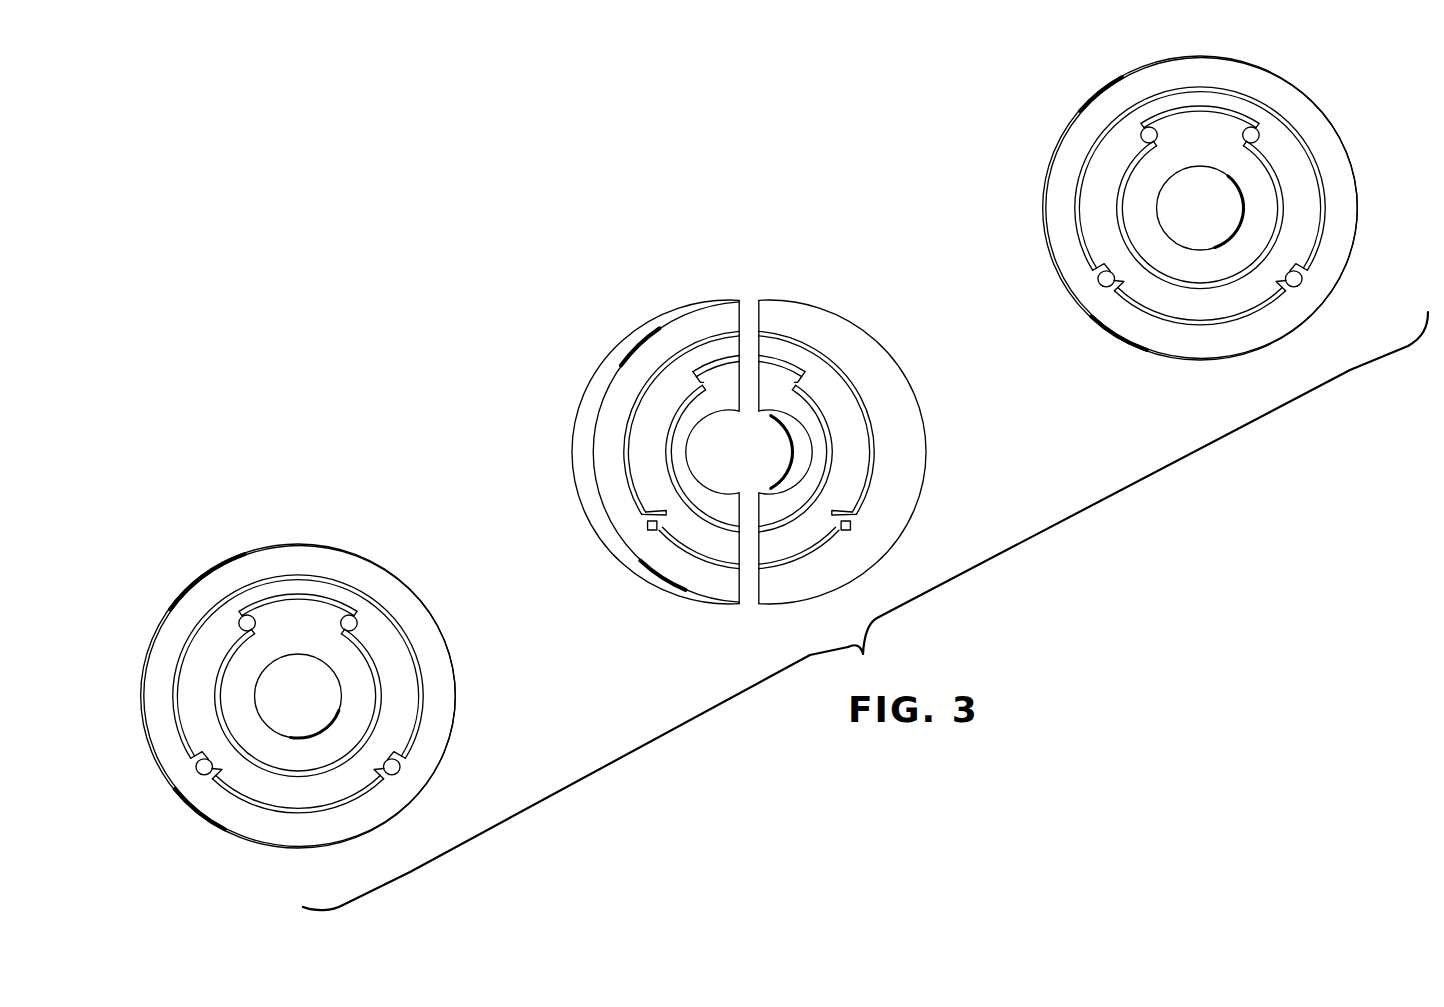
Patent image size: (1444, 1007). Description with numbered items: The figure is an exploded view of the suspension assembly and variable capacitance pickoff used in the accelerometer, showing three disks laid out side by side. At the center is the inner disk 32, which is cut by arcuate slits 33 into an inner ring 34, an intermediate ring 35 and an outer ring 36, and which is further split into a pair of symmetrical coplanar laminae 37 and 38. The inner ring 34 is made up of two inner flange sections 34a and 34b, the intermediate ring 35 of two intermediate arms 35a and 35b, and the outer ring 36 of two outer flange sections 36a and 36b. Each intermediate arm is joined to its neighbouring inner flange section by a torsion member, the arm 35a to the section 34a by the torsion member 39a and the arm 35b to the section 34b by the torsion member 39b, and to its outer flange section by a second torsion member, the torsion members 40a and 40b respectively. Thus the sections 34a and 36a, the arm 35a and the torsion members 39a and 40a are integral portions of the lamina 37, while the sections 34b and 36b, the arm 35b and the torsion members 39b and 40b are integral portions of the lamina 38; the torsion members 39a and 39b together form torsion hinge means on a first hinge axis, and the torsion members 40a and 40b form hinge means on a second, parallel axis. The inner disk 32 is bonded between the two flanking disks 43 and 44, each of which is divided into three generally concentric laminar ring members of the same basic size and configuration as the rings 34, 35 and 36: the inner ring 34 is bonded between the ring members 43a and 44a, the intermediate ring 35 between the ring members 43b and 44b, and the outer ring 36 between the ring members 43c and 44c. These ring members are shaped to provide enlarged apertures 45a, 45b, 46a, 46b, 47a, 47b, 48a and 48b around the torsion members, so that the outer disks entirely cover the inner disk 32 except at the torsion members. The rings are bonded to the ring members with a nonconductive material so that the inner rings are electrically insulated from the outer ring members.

The inner disk 32 is at (749, 434).
The arcuate slits 33 is at (765, 530).
The inner ring 34 is at (741, 446).
The inner flange section 34a is at (668, 458).
The inner flange section 34b is at (830, 480).
The intermediate ring 35 is at (756, 449).
The intermediate arm 35a is at (636, 406).
The intermediate arm 35b is at (872, 414).
The outer ring 36 is at (762, 452).
The outer flange section 36a is at (630, 352).
The outer flange section 36b is at (889, 378).
The lamina 37 is at (720, 286).
The lamina 38 is at (780, 288).
The torsion member 39a is at (698, 378).
The torsion member 39b is at (800, 377).
The torsion member 40a is at (652, 530).
The torsion member 40b is at (847, 530).
The disk 43 is at (282, 685).
The ring member 43a is at (220, 723).
The ring member 43b is at (180, 698).
The ring member 43c is at (335, 549).
The disk 44 is at (1204, 200).
The ring member 44a is at (1278, 242).
The ring member 44b is at (1322, 225).
The ring member 44c is at (1358, 190).
The enlarged aperture 45a is at (242, 620).
The enlarged aperture 45b is at (358, 622).
The enlarged aperture 46a is at (1140, 133).
The enlarged aperture 46b is at (1258, 136).
The enlarged aperture 47a is at (198, 780).
The enlarged aperture 47b is at (396, 772).
The enlarged aperture 48a is at (1096, 281).
The enlarged aperture 48b is at (1302, 283).